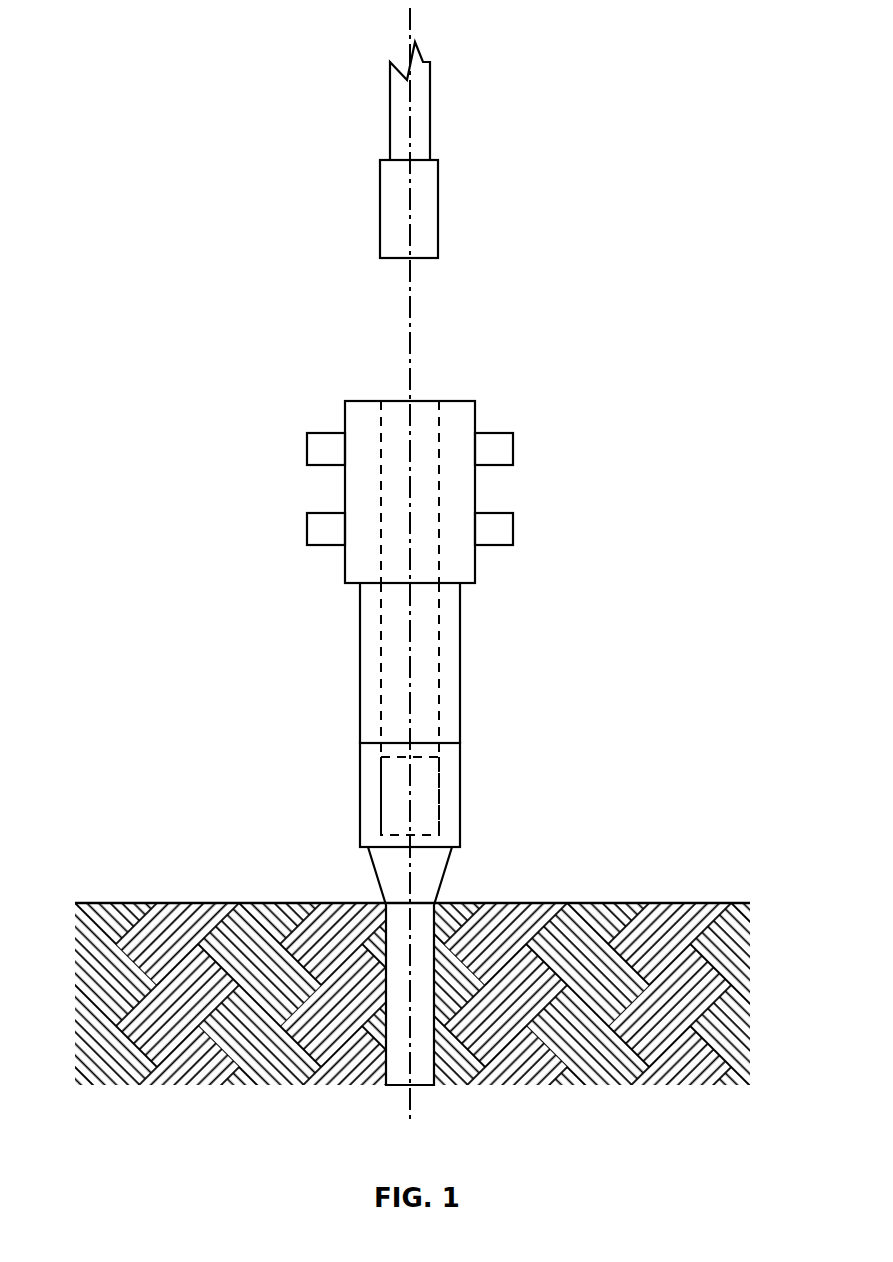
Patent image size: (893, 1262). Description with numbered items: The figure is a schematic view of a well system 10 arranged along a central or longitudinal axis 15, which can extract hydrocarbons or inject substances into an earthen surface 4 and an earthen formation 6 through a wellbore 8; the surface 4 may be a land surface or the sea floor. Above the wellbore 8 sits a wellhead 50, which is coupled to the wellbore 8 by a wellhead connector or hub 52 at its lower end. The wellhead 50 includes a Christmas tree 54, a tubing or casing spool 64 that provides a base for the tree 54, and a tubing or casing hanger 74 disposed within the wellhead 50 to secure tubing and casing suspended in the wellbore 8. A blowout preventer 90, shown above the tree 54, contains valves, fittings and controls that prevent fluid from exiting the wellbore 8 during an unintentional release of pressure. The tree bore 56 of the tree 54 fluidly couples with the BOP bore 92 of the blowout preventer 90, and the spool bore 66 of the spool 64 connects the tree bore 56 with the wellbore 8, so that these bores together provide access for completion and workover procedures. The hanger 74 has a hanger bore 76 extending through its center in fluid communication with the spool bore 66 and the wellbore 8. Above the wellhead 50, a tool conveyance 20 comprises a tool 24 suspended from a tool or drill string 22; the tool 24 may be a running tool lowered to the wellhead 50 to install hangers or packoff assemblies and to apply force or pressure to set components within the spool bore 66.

The well system 10 is at (243, 56).
The central axis 15 is at (412, 10).
The tool conveyance 20 is at (482, 141).
The drill string 22 is at (431, 103).
The tool 24 is at (423, 203).
The blowout preventer 90 is at (478, 415).
The BOP bore 92 is at (385, 481).
The wellhead 50 is at (485, 657).
The tree 54 is at (452, 643).
The tree bore 56 is at (385, 654).
The spool 64 is at (452, 777).
The spool bore 66 is at (385, 808).
The hanger 74 is at (392, 782).
The hanger bore 76 is at (437, 799).
The wellhead connector 52 is at (392, 880).
The wellbore 8 is at (442, 940).
The earthen surface 4 is at (103, 903).
The earthen formation 6 is at (195, 903).